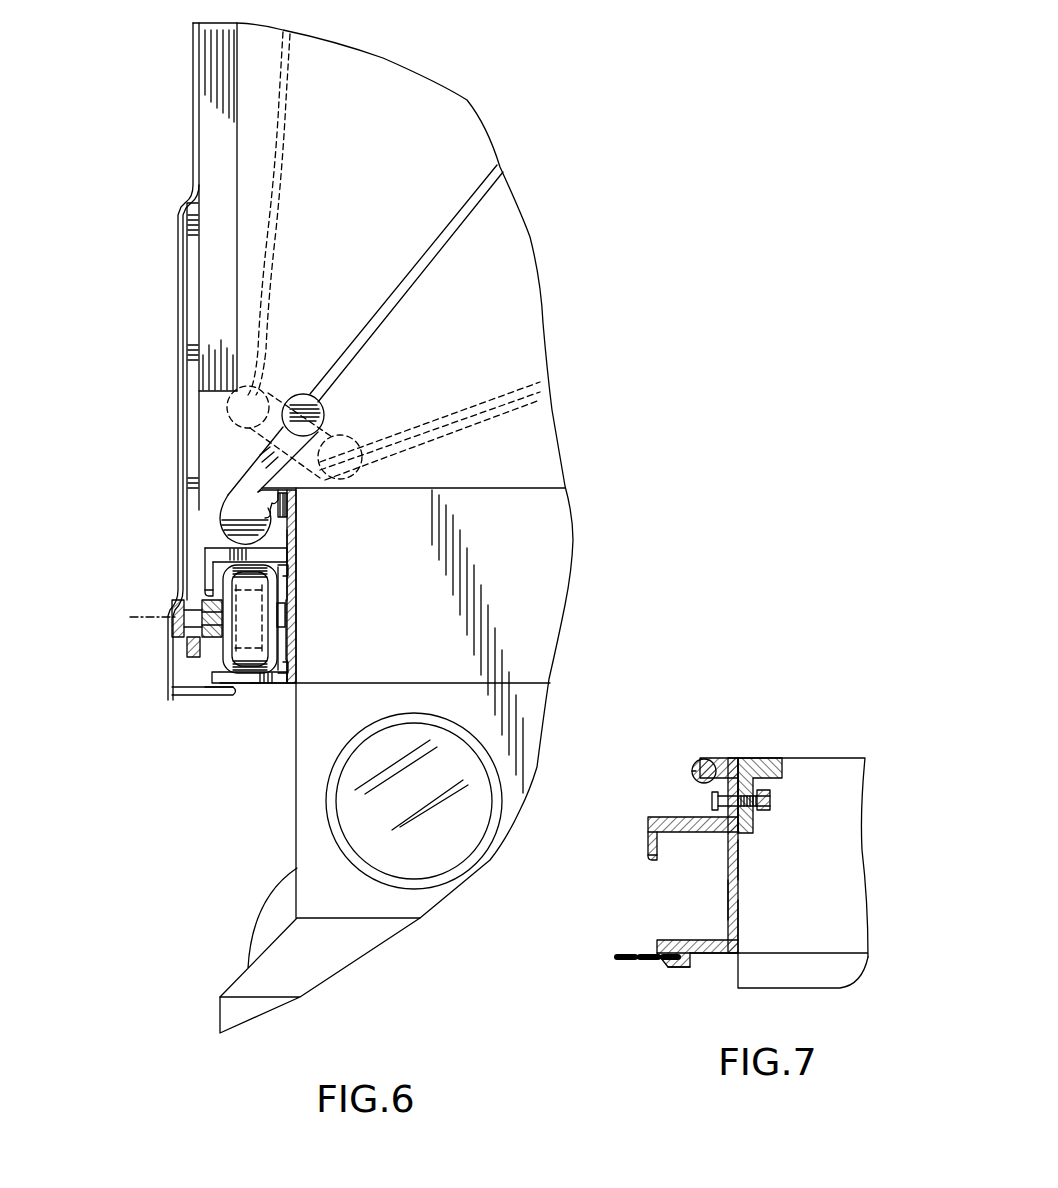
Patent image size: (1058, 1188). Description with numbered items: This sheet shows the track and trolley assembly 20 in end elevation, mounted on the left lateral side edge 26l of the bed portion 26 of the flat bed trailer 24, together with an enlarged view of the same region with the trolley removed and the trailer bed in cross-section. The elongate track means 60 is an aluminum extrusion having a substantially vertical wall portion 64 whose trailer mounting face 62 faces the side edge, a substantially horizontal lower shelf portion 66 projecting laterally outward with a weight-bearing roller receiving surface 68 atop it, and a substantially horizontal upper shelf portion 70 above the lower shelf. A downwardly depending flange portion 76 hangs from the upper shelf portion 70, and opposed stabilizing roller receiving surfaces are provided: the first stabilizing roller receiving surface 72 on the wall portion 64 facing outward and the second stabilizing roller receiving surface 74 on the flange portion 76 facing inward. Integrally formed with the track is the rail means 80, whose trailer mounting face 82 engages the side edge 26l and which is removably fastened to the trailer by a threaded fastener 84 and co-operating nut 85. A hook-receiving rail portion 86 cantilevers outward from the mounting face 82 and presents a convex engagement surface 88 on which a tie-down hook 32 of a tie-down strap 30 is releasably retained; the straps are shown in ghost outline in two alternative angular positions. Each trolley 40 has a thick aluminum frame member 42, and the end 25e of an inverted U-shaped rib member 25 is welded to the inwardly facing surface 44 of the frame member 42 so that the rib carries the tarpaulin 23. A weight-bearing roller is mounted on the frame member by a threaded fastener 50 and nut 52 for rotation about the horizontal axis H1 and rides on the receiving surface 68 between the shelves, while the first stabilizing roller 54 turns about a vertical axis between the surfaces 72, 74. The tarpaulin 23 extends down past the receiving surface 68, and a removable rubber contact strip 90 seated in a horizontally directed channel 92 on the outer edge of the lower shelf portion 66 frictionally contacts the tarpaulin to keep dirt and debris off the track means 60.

In FIG. 6, the track and trolley assembly 20 is at (112, 750).
In FIG. 6, the tarpaulin 23 is at (188, 200).
In FIG. 6, the flat bed trailer 24 is at (522, 770).
In FIG. 7, the flat bed trailer 24 is at (852, 965).
In FIG. 6, the rib member 25 is at (234, 94).
In FIG. 6, the end of rib member 25e is at (213, 384).
In FIG. 6, the bed portion 26 is at (530, 590).
In FIG. 7, the bed portion 26 is at (852, 833).
In FIG. 6, the left lateral side edge 26l is at (283, 660).
In FIG. 7, the left lateral side edge 26l is at (753, 762).
In FIG. 6, the tie-down strap 30 is at (278, 150).
In FIG. 6, the tie-down hook 32 is at (293, 398).
In FIG. 6, the trolley 40 is at (210, 330).
In FIG. 6, the frame member 42 is at (195, 254).
In FIG. 6, the inwardly facing surface 44 is at (203, 478).
In FIG. 6, the threaded fastener 50 is at (281, 622).
In FIG. 6, the nut 52 is at (183, 636).
In FIG. 6, the first stabilizing roller 54 is at (282, 590).
In FIG. 6, the elongate track means 60 is at (288, 553).
In FIG. 7, the elongate track means 60 is at (740, 827).
In FIG. 6, the trailer mounting face 62 is at (291, 684).
In FIG. 7, the trailer mounting face 62 is at (738, 917).
In FIG. 6, the vertical wall portion 64 is at (290, 542).
In FIG. 7, the vertical wall portion 64 is at (738, 867).
In FIG. 6, the lower shelf portion 66 is at (255, 684).
In FIG. 7, the lower shelf portion 66 is at (715, 955).
In FIG. 6, the weight-bearing roller receiving surface 68 is at (276, 700).
In FIG. 7, the weight-bearing roller receiving surface 68 is at (690, 940).
In FIG. 6, the upper shelf portion 70 is at (206, 545).
In FIG. 7, the upper shelf portion 70 is at (675, 832).
In FIG. 6, the first stabilizing roller receiving surface 72 is at (292, 573).
In FIG. 7, the first stabilizing roller receiving surface 72 is at (728, 873).
In FIG. 6, the second stabilizing roller receiving surface 74 is at (212, 580).
In FIG. 7, the second stabilizing roller receiving surface 74 is at (655, 860).
In FIG. 6, the downwardly depending flange portion 76 is at (203, 565).
In FIG. 7, the downwardly depending flange portion 76 is at (651, 848).
In FIG. 6, the rail means 80 is at (292, 508).
In FIG. 7, the rail means 80 is at (700, 762).
In FIG. 6, the trailer mounting face 82 is at (292, 514).
In FIG. 7, the trailer mounting face 82 is at (733, 760).
In FIG. 7, the threaded fastener 84 is at (712, 800).
In FIG. 7, the nut 85 is at (770, 800).
In FIG. 6, the hook-receiving rail portion 86 is at (298, 488).
In FIG. 7, the hook-receiving rail portion 86 is at (697, 762).
In FIG. 6, the convex engagement surface 88 is at (220, 510).
In FIG. 7, the convex engagement surface 88 is at (692, 772).
In FIG. 6, the rubber contact strip 90 is at (181, 690).
In FIG. 7, the rubber contact strip 90 is at (637, 960).
In FIG. 6, the channel 92 is at (208, 692).
In FIG. 7, the channel 92 is at (660, 965).
In FIG. 6, the horizontal axis H1 is at (176, 618).